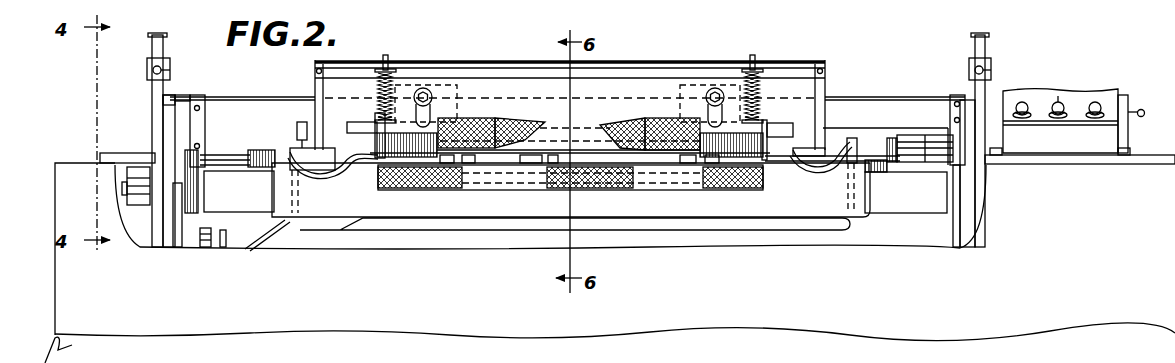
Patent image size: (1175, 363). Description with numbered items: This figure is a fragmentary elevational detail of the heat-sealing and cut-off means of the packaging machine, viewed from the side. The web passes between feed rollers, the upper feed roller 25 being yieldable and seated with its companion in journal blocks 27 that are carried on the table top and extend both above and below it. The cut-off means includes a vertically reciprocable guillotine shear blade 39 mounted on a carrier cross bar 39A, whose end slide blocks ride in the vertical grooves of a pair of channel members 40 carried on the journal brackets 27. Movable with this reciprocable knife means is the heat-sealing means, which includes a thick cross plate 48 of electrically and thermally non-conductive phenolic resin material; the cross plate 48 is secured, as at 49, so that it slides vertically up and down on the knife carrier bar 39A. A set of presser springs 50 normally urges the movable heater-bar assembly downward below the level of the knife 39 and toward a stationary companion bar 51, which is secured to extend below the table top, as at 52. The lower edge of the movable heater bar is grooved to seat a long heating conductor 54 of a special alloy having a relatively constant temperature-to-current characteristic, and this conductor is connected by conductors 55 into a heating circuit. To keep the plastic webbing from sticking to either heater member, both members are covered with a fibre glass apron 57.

The upper feed roller 25 is at (911, 136).
The journal blocks 27 is at (150, 125).
The guillotine shear blade 39 is at (270, 121).
The carrier cross bar 39A is at (180, 100).
The channel members 40 is at (176, 102).
The cross plate 48 is at (535, 90).
The securing means 49 is at (428, 88).
The presser springs 50 is at (378, 87).
The stationary companion bar 51 is at (545, 213).
The securing means for companion bar 52 is at (262, 174).
The heating conductor 54 is at (430, 160).
The conductors 55 is at (312, 177).
The fibre glass apron 57 is at (587, 131).